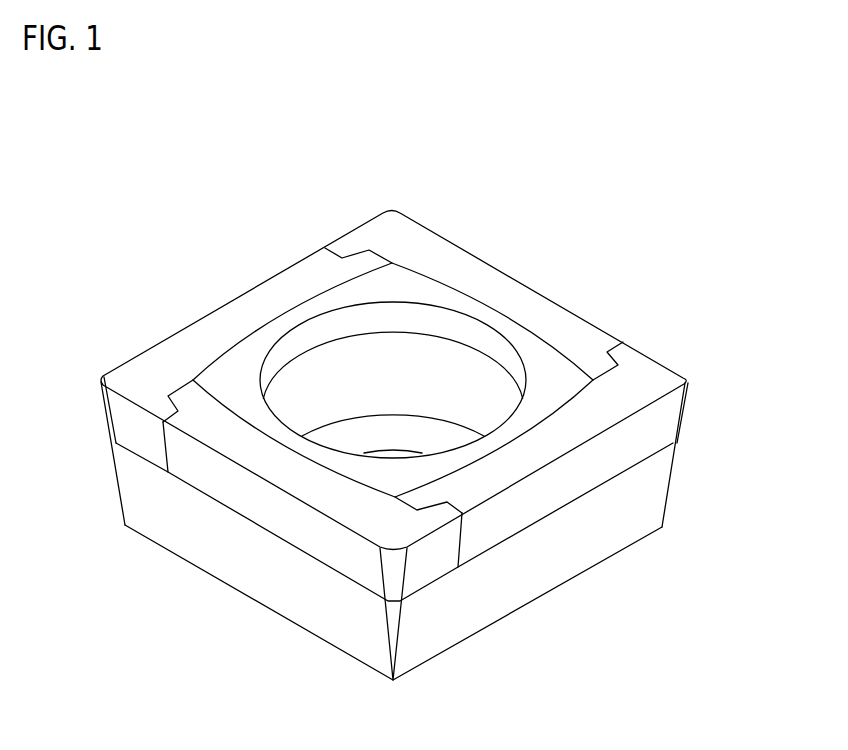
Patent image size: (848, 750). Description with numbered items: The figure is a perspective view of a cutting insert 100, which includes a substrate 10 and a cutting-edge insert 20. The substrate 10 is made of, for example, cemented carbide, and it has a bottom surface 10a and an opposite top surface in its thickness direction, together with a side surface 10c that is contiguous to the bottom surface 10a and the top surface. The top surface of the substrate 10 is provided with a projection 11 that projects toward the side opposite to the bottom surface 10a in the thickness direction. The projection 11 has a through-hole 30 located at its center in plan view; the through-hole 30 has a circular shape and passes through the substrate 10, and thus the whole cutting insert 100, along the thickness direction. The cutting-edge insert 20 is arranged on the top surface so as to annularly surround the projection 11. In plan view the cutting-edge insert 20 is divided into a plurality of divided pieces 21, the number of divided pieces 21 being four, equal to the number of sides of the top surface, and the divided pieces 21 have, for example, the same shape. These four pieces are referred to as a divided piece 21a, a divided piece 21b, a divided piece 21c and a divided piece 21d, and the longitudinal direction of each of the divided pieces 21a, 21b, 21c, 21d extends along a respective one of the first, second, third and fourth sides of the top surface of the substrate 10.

The cutting insert 100 is at (760, 281).
The substrate 10 is at (222, 589).
The bottom surface 10a is at (487, 627).
The side surface 10c is at (530, 567).
The projection 11 is at (558, 363).
The cutting-edge insert 20 is at (639, 113).
The divided piece 21 is at (413, 315).
The divided piece 21a is at (193, 403).
The divided piece 21b is at (422, 240).
The divided piece 21c is at (638, 372).
The divided piece 21d is at (283, 287).
The through-hole 30 is at (493, 387).